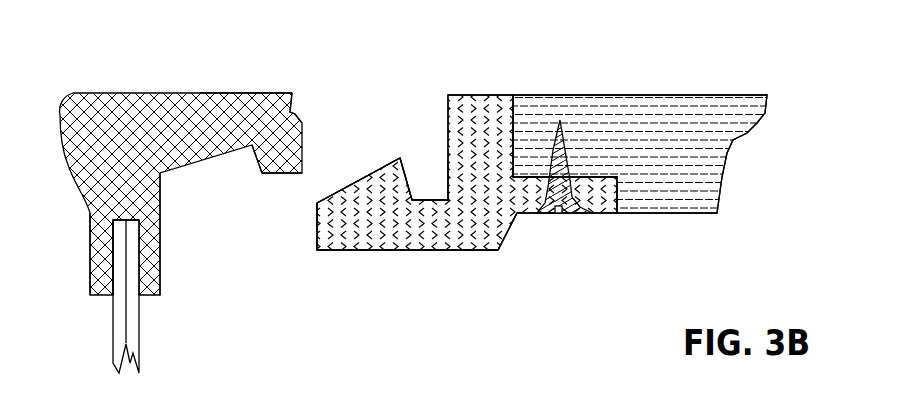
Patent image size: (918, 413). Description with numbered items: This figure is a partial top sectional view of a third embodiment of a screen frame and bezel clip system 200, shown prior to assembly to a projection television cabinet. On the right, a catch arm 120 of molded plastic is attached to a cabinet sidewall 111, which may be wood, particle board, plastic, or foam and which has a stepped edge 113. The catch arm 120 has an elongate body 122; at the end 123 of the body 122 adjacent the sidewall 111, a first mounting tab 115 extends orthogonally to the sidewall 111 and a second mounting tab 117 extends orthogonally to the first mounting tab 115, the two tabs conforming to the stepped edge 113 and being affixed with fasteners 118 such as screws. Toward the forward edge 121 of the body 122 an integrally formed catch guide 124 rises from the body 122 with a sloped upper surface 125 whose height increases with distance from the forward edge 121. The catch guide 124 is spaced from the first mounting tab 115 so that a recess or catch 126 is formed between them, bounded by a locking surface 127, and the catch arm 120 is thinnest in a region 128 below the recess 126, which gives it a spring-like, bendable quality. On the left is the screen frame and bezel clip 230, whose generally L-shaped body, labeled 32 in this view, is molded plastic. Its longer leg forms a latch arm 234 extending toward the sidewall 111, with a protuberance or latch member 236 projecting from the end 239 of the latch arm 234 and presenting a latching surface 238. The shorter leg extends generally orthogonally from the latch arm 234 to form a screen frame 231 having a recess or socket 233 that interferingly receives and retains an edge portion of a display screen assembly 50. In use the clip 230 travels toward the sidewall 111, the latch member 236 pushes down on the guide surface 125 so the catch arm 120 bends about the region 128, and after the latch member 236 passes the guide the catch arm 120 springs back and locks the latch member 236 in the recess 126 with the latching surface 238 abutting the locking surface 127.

The cap / cover body 32 is at (108, 92).
The latch arm 234 is at (220, 93).
The end of the latch arm 239 is at (303, 123).
The latching surface 238 is at (255, 157).
The latch member 236 is at (275, 174).
The screen frame and bezel clip 230 is at (168, 216).
The screen frame 231 is at (90, 245).
The recess or socket 233 is at (116, 270).
The display screen assembly 50 is at (148, 318).
The catch arm 120 is at (527, 184).
The forward edge 121 is at (315, 240).
The elongate body 122 is at (487, 253).
The end of the body 123 is at (507, 238).
The catch guide 124 is at (386, 164).
The upper surface 125 is at (345, 188).
The recess or catch 126 is at (420, 147).
The locking surface 127 is at (405, 163).
The thinnest region 128 is at (403, 251).
The first mounting tab 115 is at (457, 94).
The stepped edge 113 is at (503, 107).
The cabinet sidewall 111 is at (661, 95).
The second mounting tab 117 is at (600, 215).
The fasteners 118 is at (565, 214).
The screen frame and bezel clip system 200 is at (626, 325).